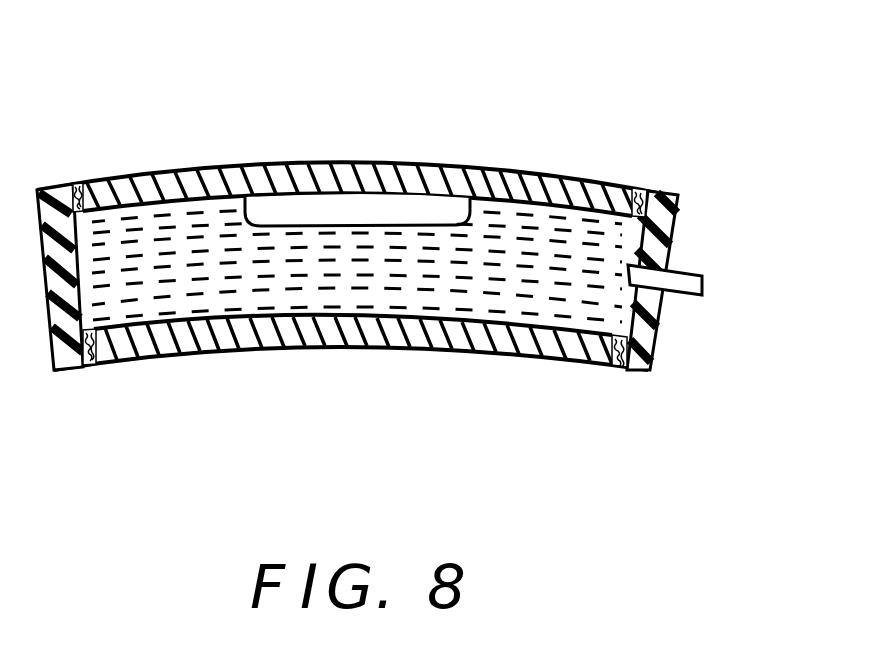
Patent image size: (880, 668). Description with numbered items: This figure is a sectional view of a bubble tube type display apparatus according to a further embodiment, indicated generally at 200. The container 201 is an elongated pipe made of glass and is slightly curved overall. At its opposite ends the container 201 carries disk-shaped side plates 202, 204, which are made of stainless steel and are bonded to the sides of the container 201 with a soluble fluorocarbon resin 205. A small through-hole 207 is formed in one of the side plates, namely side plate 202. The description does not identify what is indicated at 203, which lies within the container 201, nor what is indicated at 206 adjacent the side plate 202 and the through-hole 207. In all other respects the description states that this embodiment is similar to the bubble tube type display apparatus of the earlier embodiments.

The curved liquid-filled cell 200 is at (384, 131).
The container 201 is at (572, 174).
The side plate 202 is at (681, 195).
The liquid 203 is at (484, 290).
The side plate 204 is at (417, 208).
The soluble fluorocarbon resin 205 is at (79, 185).
The tube 206 is at (698, 275).
The through-hole 207 is at (658, 318).